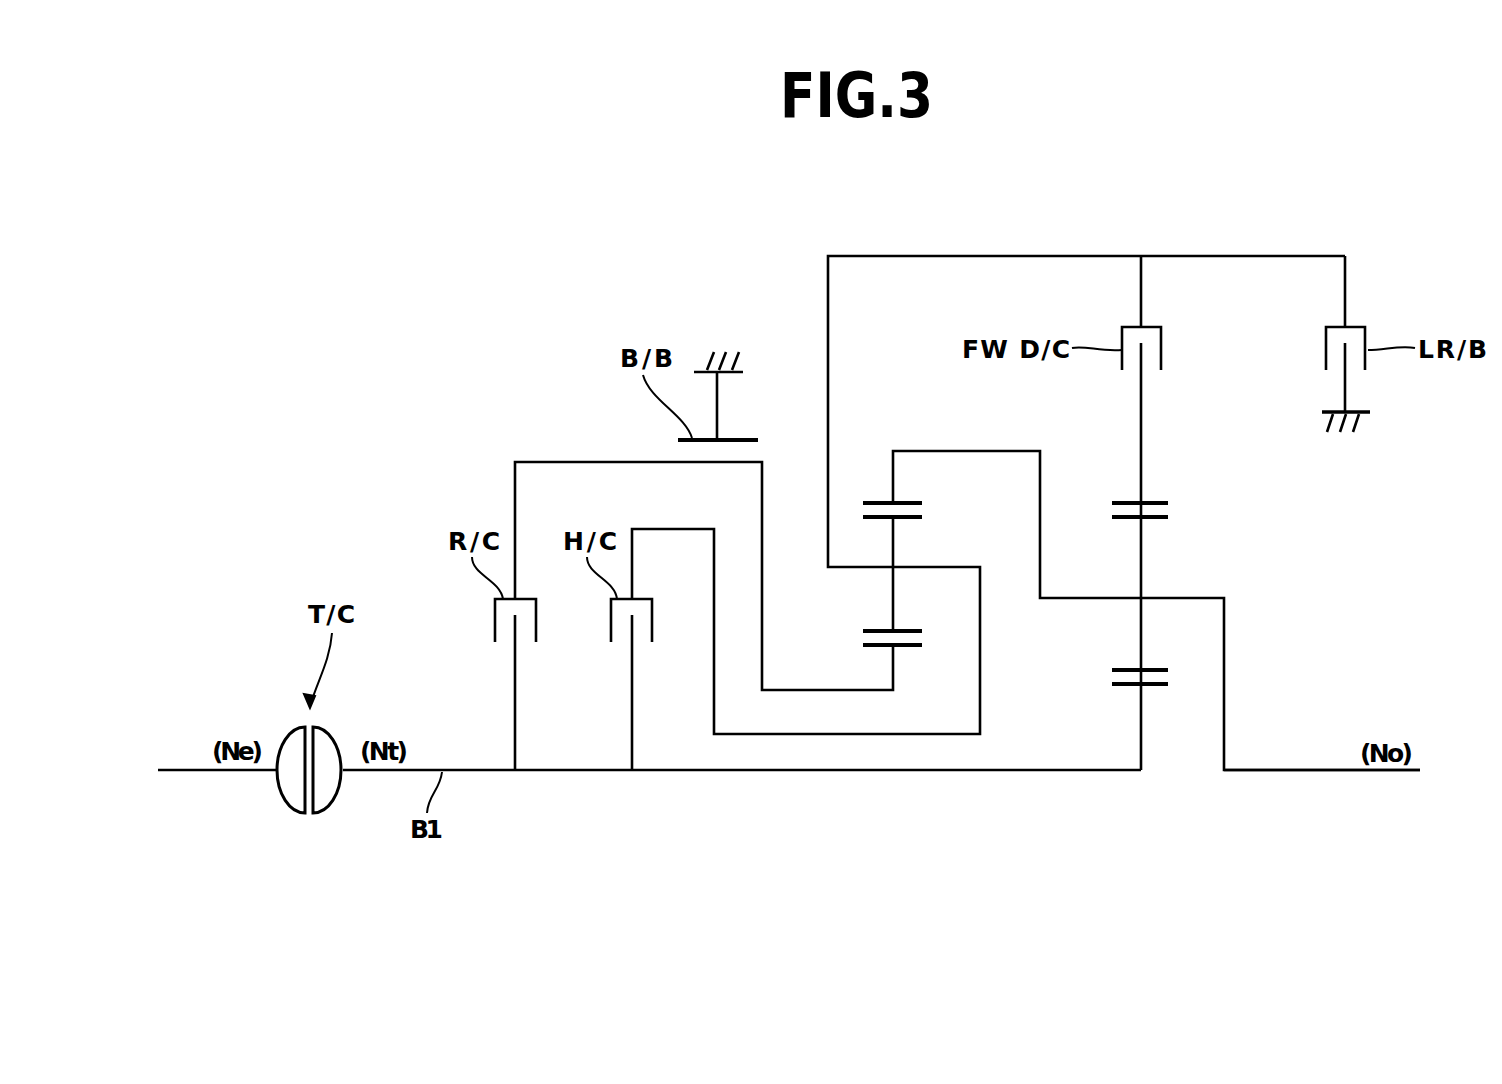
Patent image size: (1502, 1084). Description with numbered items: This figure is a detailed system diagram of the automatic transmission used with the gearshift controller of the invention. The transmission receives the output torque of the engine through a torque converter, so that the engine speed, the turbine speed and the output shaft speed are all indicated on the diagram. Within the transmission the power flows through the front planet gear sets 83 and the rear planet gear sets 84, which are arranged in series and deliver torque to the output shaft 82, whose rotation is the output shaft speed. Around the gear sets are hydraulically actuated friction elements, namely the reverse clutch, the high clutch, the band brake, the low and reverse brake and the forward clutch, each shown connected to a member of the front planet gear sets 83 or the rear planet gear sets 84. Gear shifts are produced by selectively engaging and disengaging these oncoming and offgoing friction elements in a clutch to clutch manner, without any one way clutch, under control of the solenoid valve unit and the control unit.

The output shaft 82 is at (1320, 772).
The front planet gear sets 83 is at (878, 503).
The rear planet gear sets 84 is at (1165, 567).